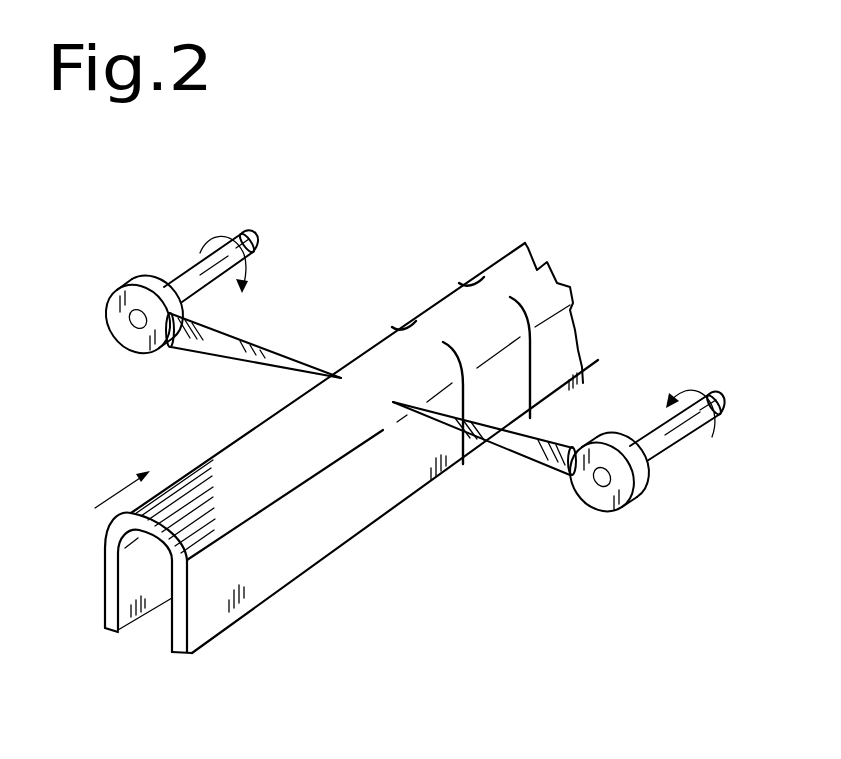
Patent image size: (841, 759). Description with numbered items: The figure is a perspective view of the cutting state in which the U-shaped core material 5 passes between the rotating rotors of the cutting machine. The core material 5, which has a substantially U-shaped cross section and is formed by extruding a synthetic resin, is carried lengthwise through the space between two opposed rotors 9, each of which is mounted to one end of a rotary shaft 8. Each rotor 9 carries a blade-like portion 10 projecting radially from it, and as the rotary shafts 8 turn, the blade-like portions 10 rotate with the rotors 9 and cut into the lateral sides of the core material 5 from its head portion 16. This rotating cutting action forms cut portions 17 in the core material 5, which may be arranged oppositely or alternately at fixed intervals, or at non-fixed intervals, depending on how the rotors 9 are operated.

The core material 5 is at (285, 562).
The rotary shaft 8 is at (187, 272).
The rotor 9 is at (123, 337).
The blade-like portion 10 is at (210, 343).
The head portion 16 is at (537, 272).
The cut portion 17 is at (400, 322).